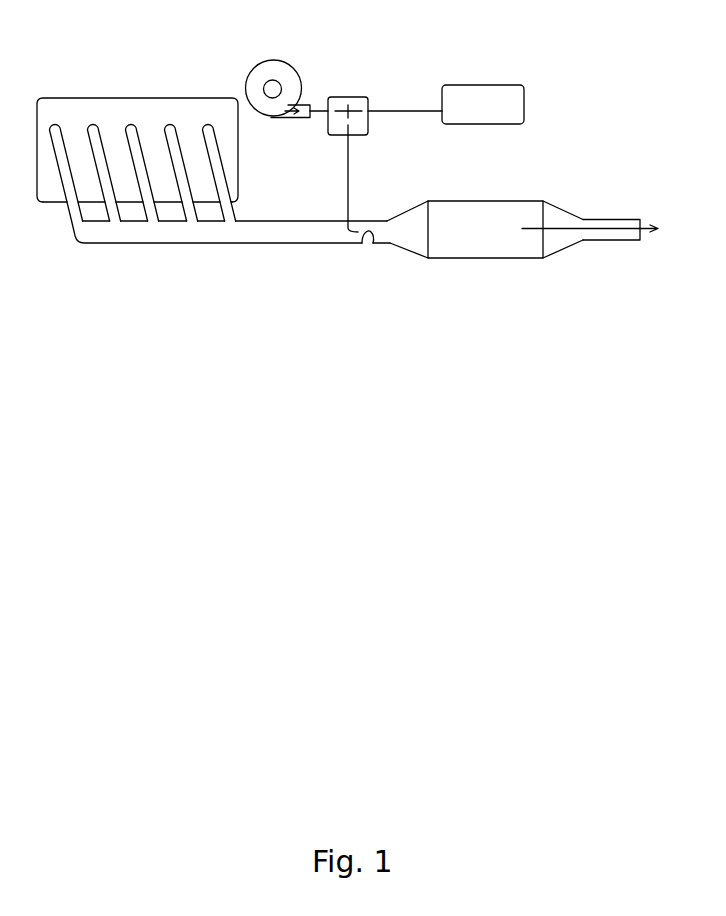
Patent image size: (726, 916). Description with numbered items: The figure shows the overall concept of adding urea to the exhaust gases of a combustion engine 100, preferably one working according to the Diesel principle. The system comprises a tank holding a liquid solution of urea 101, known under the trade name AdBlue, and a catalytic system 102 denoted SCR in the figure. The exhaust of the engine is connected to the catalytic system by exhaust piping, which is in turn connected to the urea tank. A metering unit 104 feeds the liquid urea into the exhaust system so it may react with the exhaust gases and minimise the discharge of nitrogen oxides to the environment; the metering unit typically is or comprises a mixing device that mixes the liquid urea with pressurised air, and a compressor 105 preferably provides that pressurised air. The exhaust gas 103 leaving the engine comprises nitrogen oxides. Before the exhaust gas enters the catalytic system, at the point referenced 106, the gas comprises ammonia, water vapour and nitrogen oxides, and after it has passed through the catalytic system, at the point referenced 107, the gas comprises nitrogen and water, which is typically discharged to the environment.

The combustion engine 100 is at (152, 112).
The tank holding a liquid solution of urea 101 is at (477, 92).
The catalytic system 102 is at (450, 256).
The exhaust gas 103 is at (232, 229).
The metering unit 104 is at (348, 102).
The compressor 105 is at (255, 83).
The exhaust gas before entering the catalytic system 106 is at (370, 241).
The exhaust gas after the catalytic system 107 is at (656, 237).